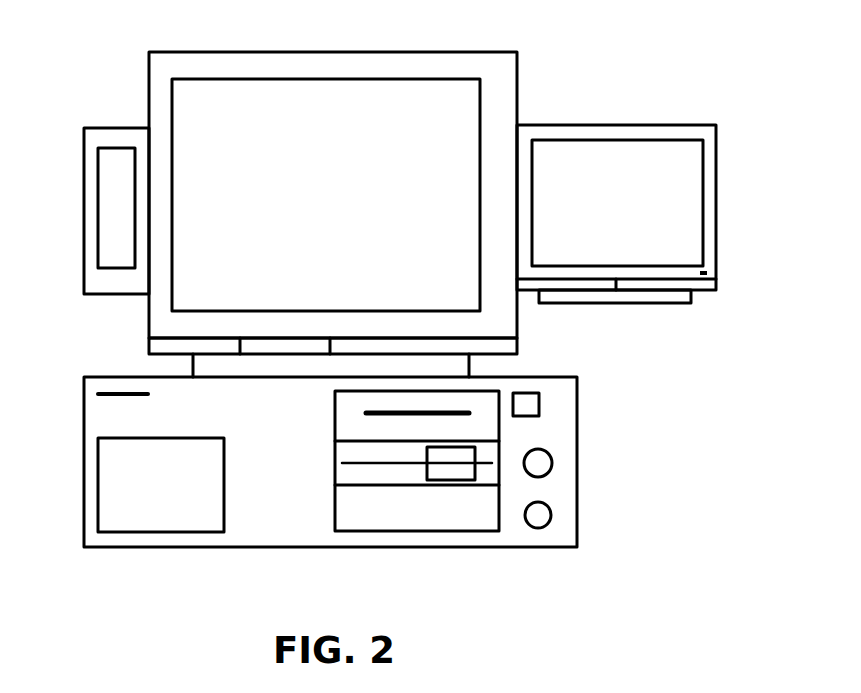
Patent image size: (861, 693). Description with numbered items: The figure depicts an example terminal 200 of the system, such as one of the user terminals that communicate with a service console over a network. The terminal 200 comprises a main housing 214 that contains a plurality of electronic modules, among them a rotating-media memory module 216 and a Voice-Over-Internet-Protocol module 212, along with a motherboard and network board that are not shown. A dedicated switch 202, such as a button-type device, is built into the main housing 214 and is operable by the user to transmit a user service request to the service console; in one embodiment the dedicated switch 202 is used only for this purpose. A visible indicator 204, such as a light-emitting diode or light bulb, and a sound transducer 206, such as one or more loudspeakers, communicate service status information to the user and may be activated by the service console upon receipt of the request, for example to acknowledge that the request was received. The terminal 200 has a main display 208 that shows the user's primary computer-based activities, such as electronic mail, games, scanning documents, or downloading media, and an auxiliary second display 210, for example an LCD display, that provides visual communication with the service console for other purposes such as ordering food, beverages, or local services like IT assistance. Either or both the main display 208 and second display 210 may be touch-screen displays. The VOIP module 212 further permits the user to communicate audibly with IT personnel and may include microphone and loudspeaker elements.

The terminal 200 is at (638, 73).
The dedicated switch 202 is at (551, 515).
The visible indicator 204 is at (552, 463).
The sound transducer 206 is at (83, 183).
The main display 208 is at (417, 168).
The second display 210 is at (648, 233).
The Voice-Over-Internet-Protocol module 212 is at (97, 508).
The main housing 214 is at (577, 401).
The rotating-media memory module 216 is at (450, 535).